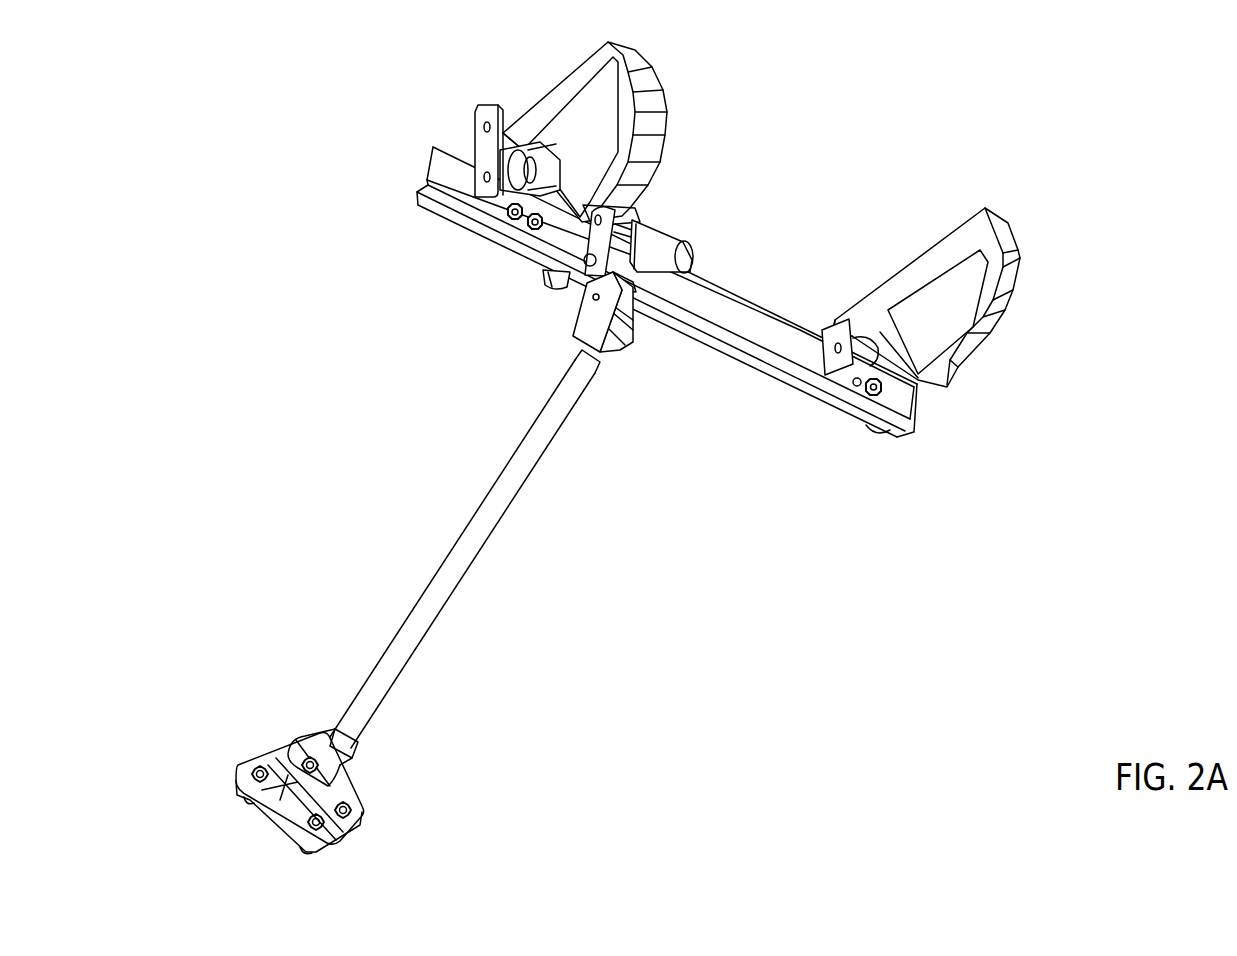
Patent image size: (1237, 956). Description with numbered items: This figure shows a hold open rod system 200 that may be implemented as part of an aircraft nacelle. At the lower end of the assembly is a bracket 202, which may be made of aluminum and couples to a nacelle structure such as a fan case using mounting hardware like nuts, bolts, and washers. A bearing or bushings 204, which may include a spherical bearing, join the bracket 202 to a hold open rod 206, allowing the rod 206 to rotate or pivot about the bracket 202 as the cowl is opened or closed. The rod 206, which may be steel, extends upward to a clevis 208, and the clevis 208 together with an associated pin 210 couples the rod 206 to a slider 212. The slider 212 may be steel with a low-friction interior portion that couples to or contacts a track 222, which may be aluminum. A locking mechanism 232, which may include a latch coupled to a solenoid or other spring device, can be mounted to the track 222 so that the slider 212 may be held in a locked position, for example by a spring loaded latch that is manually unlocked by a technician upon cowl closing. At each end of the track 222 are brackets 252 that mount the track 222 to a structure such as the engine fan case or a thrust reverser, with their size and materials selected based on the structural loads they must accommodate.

The system 200 is at (1112, 190).
The bracket 202 is at (278, 744).
The bearing or bushings 204 is at (358, 754).
The hold open rod (HOR) 206 is at (478, 562).
The clevis 208 is at (619, 348).
The pin 210 is at (583, 297).
The slider 212 is at (628, 289).
The track 222 is at (437, 178).
The locking mechanism 232 is at (619, 218).
The brackets 252 is at (553, 93).